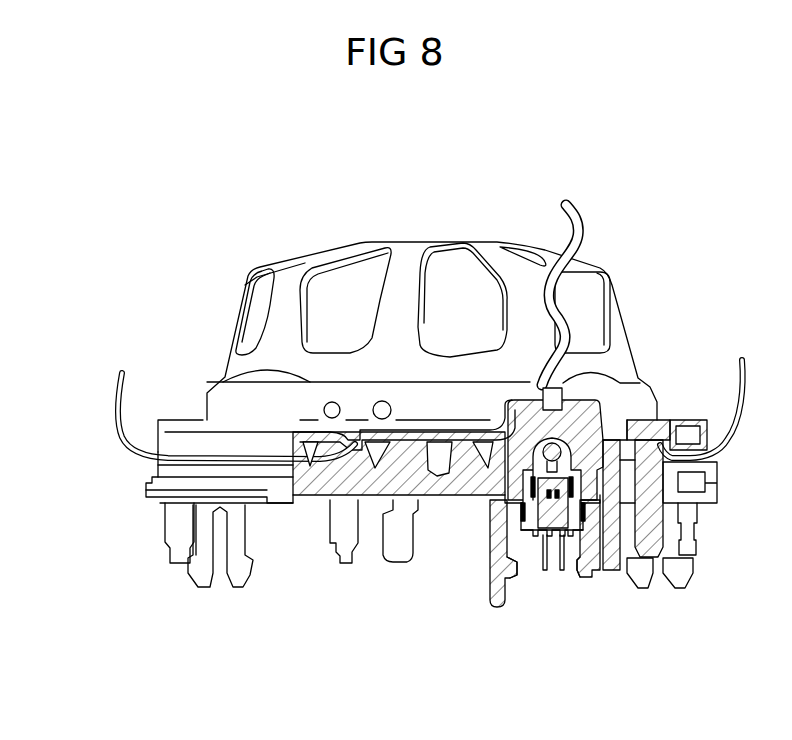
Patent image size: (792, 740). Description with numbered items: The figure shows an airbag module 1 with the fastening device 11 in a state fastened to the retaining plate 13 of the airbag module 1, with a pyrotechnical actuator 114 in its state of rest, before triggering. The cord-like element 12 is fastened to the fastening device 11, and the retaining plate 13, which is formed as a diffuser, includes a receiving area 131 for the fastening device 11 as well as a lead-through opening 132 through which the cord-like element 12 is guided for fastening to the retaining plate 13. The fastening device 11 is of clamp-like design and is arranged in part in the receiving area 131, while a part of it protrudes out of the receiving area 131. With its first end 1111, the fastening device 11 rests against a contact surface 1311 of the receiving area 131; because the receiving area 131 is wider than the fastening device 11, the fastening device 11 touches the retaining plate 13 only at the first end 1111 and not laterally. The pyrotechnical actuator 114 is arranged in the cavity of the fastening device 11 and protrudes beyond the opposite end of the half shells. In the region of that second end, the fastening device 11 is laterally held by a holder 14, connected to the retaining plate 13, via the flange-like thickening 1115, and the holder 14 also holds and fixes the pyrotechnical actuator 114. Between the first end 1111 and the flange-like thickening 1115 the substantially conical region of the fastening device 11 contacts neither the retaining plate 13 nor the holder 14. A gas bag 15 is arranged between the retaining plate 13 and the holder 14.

The airbag module 1 is at (243, 265).
The fastening device 11 is at (572, 432).
The cord-like element 12 is at (575, 248).
The retaining plate 13 is at (405, 265).
The holder 14 is at (462, 478).
The gas bag 15 is at (133, 450).
The pyrotechnical actuator 114 is at (548, 507).
The receiving area 131 is at (500, 410).
The lead-through opening 132 is at (565, 412).
The first end 1111 is at (592, 402).
The flange-like thickening 1115 is at (582, 565).
The contact surface 1311 is at (514, 398).